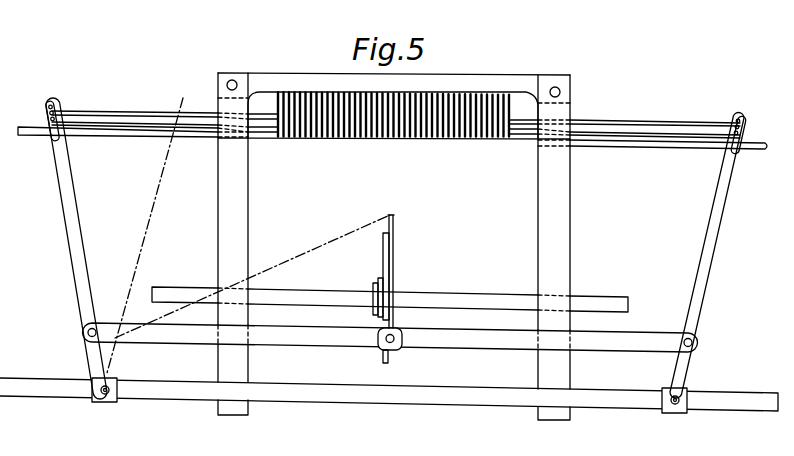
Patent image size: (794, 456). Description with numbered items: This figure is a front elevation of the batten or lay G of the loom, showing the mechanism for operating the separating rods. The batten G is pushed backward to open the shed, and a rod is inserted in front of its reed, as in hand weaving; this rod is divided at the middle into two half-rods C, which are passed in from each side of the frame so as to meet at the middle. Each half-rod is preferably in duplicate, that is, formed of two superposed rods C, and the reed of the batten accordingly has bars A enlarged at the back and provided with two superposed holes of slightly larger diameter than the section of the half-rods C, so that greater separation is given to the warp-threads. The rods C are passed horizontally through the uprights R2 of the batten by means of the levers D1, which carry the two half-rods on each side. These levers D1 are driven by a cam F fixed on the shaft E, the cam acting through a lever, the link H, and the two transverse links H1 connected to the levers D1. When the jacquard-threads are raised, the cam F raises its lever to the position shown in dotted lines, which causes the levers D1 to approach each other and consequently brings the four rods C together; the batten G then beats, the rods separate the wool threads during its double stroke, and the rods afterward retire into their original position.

The batten G is at (394, 246).
The bars of the reed A is at (393, 115).
The uprights of the batten R2 is at (392, 121).
The half-rods C is at (392, 124).
The levers D1 is at (395, 248).
The shaft E is at (390, 296).
The transverse links H1 is at (390, 341).
The link H is at (400, 265).
The cam F is at (390, 297).